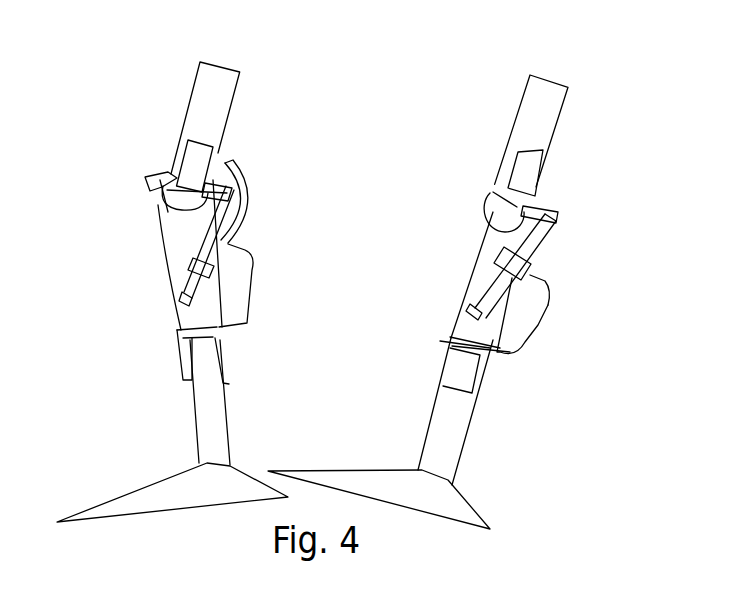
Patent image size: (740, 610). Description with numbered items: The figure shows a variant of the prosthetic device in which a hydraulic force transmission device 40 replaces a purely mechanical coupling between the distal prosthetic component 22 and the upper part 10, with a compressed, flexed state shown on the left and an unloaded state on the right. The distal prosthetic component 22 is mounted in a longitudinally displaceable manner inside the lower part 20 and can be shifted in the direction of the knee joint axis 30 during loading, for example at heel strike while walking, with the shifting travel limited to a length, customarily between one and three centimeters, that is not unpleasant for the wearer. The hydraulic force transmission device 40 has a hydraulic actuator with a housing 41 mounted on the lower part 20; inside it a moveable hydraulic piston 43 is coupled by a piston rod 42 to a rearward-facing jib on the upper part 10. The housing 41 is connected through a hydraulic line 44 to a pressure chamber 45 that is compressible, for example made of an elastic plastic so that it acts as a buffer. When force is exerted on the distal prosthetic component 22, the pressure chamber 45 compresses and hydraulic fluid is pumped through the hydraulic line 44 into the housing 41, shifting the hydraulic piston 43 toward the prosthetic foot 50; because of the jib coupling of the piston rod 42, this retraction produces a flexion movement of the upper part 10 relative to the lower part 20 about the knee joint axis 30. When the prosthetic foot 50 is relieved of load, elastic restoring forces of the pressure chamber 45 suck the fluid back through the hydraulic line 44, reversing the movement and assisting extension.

The upper part 10 is at (222, 113).
The lower part 20 is at (170, 262).
The distal prosthetic component 22 is at (227, 417).
The knee joint axis 30 is at (147, 190).
The hydraulic force transmission device 40 is at (262, 243).
The housing 41 is at (468, 287).
The piston rod 42 is at (560, 218).
The hydraulic piston 43 is at (543, 281).
The hydraulic line 44 is at (537, 323).
The pressure chamber 45 is at (440, 341).
The prosthetic foot 50 is at (147, 490).